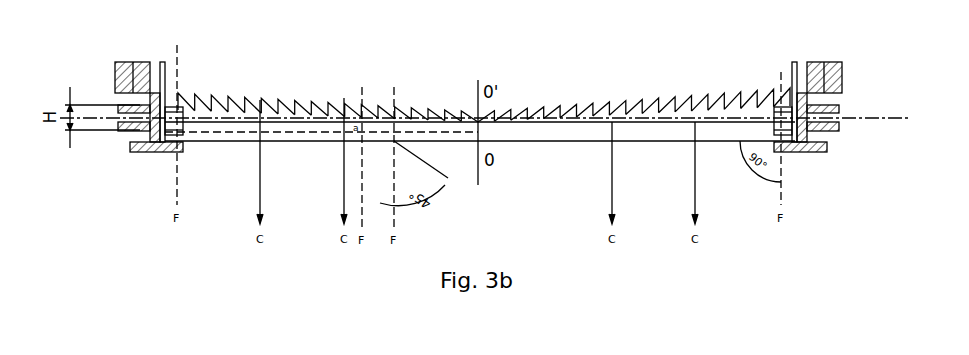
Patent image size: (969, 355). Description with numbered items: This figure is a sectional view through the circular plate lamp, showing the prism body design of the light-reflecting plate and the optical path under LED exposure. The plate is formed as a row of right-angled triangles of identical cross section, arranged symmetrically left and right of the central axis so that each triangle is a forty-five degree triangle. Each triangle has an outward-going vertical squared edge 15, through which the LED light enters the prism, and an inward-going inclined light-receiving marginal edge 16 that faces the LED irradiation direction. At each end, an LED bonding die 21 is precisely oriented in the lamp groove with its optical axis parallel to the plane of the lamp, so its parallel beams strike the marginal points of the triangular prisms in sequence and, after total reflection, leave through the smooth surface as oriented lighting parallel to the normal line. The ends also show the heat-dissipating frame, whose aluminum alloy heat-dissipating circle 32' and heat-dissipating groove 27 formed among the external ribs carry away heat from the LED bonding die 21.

The outward-going vertical squared edge 15 is at (168, 108).
The light-receiving marginal edge 16 is at (183, 92).
The LED bonding die 21 is at (152, 86).
The heat-dissipating groove 27 is at (133, 115).
The heat-dissipating circle 32' is at (828, 122).